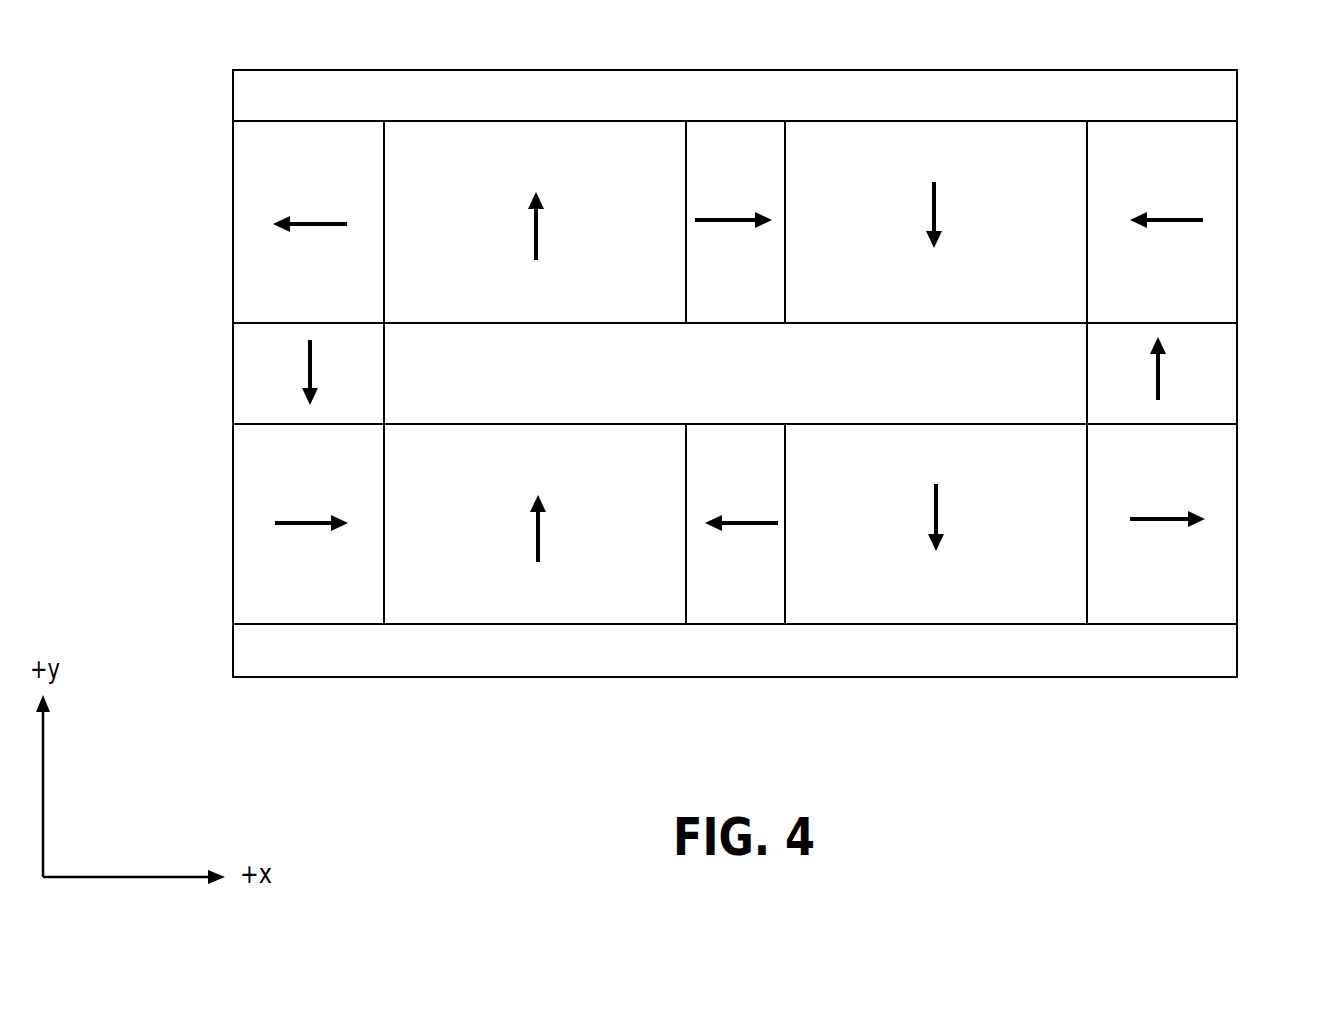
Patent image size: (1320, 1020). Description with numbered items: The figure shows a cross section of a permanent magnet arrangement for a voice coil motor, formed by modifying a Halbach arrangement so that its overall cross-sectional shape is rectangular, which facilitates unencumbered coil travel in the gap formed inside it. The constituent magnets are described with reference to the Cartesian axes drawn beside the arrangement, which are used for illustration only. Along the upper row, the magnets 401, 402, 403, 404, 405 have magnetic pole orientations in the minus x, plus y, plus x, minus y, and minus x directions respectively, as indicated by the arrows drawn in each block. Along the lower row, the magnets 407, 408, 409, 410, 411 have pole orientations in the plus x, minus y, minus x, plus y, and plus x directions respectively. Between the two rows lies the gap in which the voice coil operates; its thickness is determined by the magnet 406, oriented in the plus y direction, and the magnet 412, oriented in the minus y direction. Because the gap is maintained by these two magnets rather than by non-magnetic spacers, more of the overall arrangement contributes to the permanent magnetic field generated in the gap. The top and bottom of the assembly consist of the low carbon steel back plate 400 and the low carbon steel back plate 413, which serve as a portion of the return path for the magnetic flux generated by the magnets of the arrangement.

The low carbon steel back plate 400 is at (755, 109).
The magnet 401 is at (327, 309).
The magnet 402 is at (557, 309).
The magnet 403 is at (756, 309).
The magnet 404 is at (956, 309).
The magnet 405 is at (1179, 309).
The magnet 406 is at (1208, 369).
The magnet 407 is at (1183, 614).
The magnet 408 is at (958, 614).
The magnet 409 is at (759, 614).
The magnet 410 is at (562, 614).
The magnet 411 is at (330, 614).
The magnet 412 is at (262, 374).
The low carbon steel back plate 413 is at (762, 663).